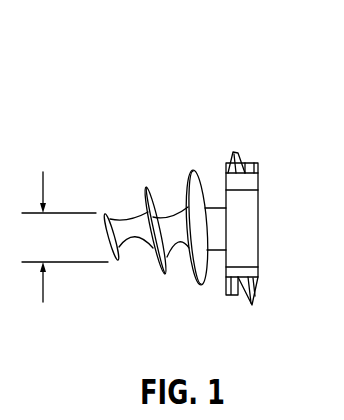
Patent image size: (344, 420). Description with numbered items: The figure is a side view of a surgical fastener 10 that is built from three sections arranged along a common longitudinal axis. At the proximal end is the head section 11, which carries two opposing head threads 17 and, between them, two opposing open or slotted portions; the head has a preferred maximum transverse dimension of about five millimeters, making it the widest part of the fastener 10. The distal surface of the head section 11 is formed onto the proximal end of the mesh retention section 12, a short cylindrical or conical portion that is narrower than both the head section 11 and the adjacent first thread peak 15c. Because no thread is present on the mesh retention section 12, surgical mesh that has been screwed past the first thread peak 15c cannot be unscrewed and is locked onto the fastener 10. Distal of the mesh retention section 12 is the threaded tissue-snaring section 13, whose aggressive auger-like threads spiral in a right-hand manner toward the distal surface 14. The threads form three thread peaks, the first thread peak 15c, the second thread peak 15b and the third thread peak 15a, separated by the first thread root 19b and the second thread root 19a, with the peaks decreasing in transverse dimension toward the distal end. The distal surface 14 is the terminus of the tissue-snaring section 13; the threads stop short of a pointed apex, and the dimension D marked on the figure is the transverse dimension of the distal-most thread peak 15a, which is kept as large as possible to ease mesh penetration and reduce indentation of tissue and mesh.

The fastener 10 is at (210, 57).
The head section 11 is at (258, 180).
The mesh retention section 12 is at (214, 207).
The threaded tissue-snaring section 13 is at (160, 267).
The distal surface 14 is at (106, 222).
The third thread peak 15a is at (107, 212).
The second thread peak 15b is at (145, 186).
The first thread peak 15c is at (194, 166).
The head threads 17 is at (240, 156).
The second thread root 19a is at (133, 241).
The first thread root 19b is at (178, 252).